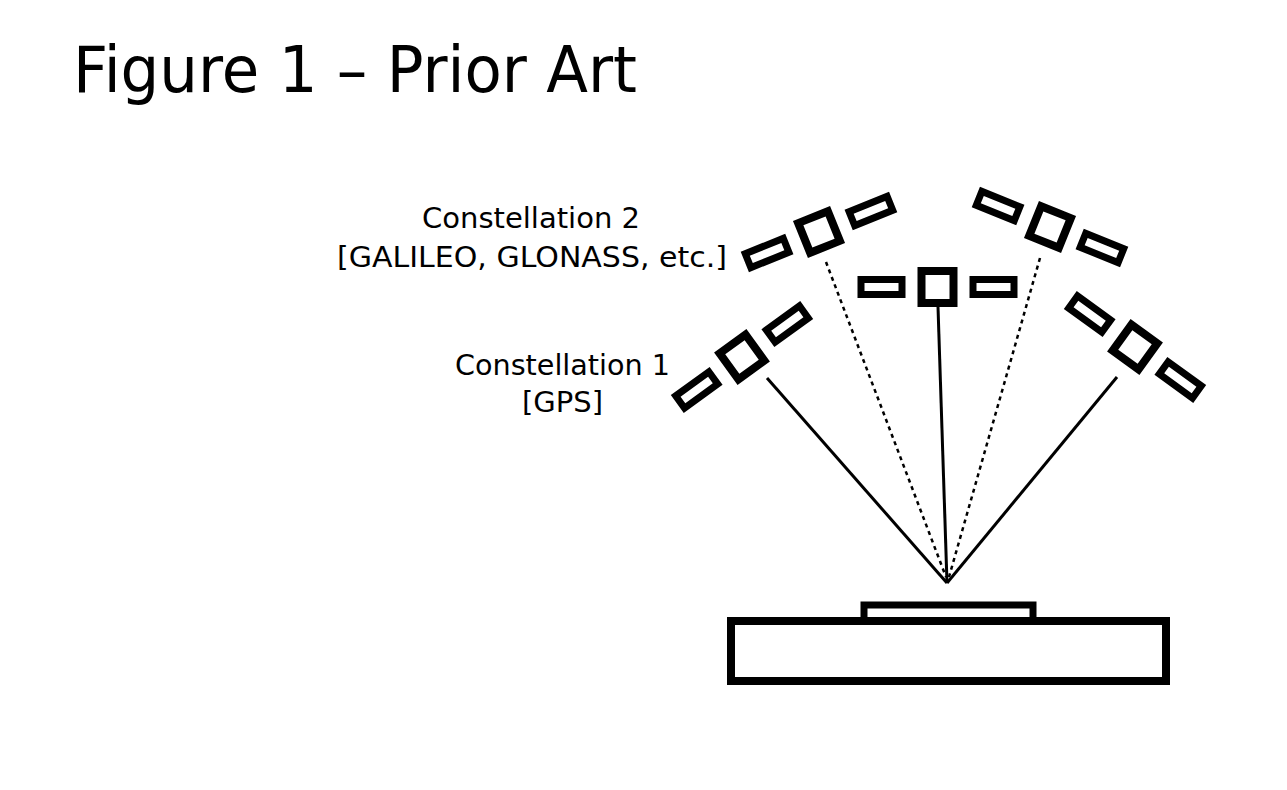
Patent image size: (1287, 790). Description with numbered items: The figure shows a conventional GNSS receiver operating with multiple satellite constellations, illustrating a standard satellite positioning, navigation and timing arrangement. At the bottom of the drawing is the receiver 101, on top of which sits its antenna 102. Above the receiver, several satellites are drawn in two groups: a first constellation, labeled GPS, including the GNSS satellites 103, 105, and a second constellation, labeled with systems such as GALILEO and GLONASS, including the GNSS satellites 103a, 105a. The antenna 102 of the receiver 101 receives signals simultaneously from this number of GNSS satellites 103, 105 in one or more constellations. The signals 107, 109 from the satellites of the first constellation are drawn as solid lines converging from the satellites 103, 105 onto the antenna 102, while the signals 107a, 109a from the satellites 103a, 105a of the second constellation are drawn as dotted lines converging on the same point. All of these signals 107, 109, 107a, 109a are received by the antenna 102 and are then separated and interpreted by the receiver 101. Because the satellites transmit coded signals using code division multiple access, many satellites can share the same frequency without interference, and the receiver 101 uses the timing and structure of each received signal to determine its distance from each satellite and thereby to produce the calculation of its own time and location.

The receiver 101 is at (909, 663).
The antenna 102 is at (917, 596).
The GNSS satellite 103 is at (1164, 358).
The GNSS satellite 103a is at (937, 271).
The GNSS satellite 105 is at (1050, 223).
The GNSS satellite 105a is at (819, 227).
The signal 107 is at (1032, 480).
The signal 107a is at (968, 445).
The signal 109 is at (1008, 417).
The signal 109a is at (886, 419).